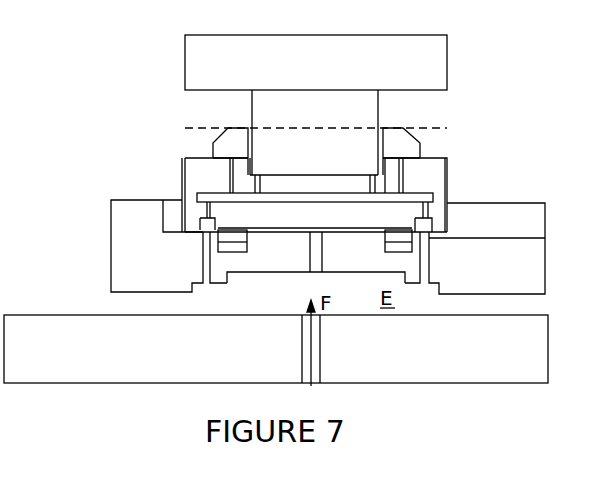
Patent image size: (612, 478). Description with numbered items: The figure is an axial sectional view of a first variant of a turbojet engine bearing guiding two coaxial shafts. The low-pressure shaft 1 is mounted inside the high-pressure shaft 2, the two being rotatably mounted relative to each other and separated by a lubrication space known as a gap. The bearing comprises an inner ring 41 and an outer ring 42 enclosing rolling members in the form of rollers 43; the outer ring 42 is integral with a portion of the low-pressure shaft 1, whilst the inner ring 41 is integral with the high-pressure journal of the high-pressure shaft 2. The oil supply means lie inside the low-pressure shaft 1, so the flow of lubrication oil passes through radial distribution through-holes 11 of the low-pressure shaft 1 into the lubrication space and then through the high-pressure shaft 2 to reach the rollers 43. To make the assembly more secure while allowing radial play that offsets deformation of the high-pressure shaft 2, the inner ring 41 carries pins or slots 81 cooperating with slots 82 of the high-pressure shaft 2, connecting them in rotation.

The low-pressure shaft 1 is at (60, 335).
The high-pressure shaft 2 is at (123, 227).
The radial distribution through-holes 11 is at (320, 348).
The inner ring 41 is at (438, 167).
The outer ring 42 is at (440, 53).
The rollers 43 is at (370, 113).
The pins or slots 81 is at (182, 165).
The slots 82 is at (170, 212).